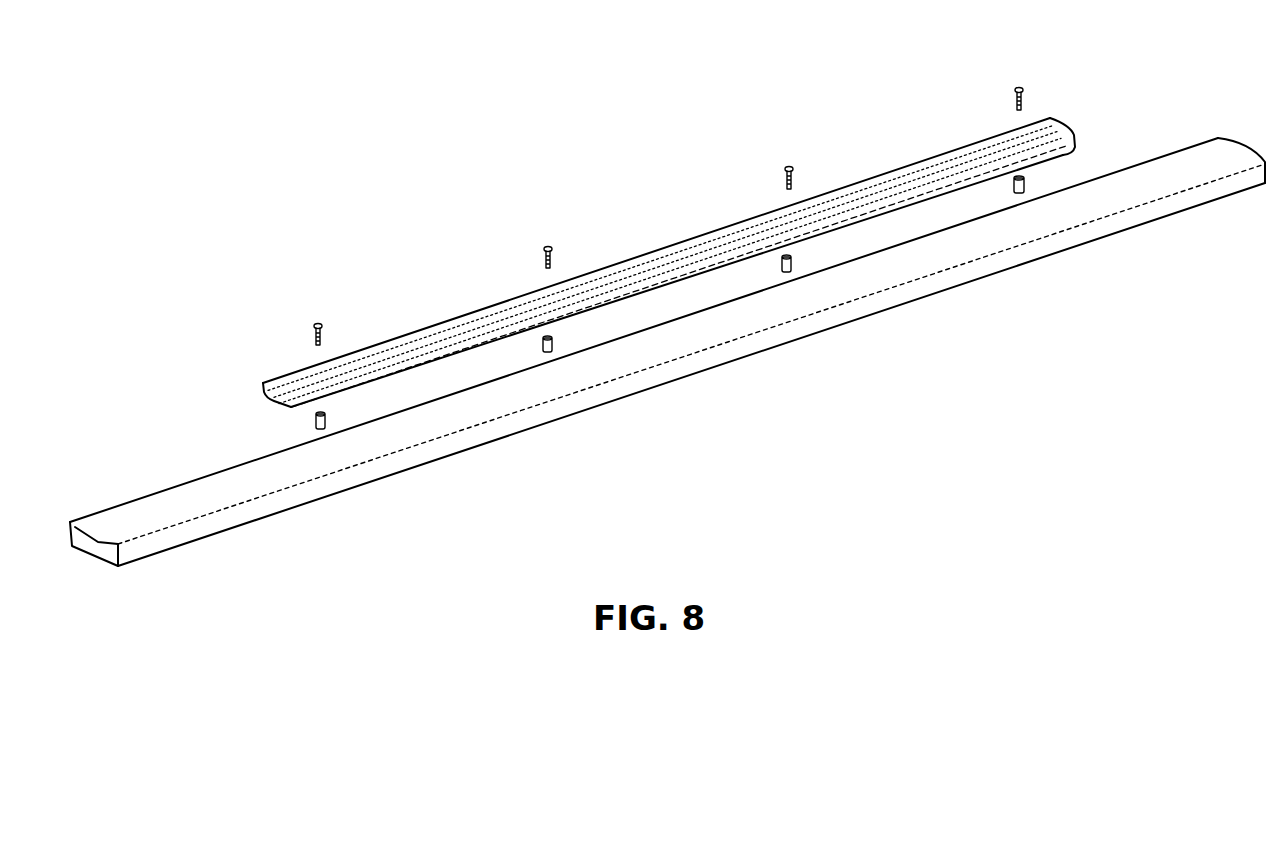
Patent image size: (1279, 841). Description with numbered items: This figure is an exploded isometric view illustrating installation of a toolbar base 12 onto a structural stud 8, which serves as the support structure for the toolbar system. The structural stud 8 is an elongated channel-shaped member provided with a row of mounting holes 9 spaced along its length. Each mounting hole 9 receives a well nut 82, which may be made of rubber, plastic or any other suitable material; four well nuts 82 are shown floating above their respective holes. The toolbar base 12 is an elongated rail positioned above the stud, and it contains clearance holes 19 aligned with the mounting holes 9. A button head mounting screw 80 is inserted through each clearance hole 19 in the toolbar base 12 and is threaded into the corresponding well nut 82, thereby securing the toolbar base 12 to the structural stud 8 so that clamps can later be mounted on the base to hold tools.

The structural stud 8 is at (245, 498).
The mounting holes 9 is at (315, 460).
The toolbar base 12 is at (447, 320).
The clearance hole 19 is at (310, 368).
The button head mounting screw 80 is at (312, 325).
The well nut 82 is at (313, 420).